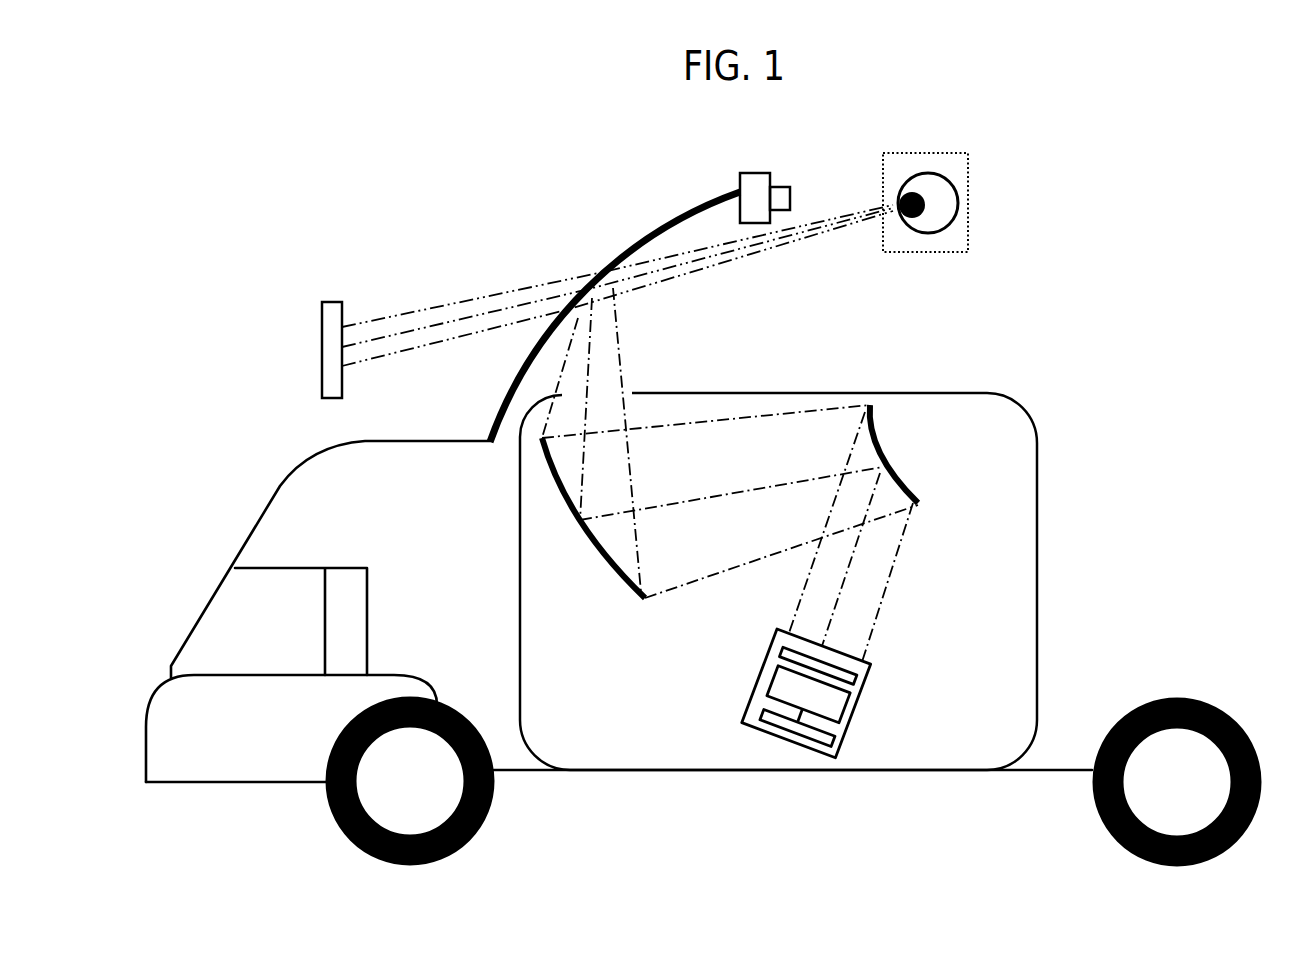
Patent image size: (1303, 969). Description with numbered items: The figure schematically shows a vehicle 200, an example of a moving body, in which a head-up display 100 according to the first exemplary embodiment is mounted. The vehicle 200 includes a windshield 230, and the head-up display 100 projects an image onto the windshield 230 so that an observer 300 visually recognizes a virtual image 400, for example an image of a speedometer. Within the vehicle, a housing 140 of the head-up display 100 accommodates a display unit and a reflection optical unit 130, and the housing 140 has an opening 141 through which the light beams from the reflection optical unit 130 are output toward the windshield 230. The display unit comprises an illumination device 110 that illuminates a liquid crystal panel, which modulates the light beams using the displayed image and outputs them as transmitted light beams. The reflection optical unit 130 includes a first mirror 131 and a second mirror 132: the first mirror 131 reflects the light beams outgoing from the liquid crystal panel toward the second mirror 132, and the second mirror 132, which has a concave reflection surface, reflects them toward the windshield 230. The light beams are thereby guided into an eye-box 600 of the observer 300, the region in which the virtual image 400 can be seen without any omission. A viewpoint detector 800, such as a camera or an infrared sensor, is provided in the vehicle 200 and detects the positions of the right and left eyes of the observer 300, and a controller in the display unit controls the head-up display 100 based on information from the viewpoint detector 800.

The head-up display 100 is at (834, 529).
The illumination device 110 is at (813, 585).
The reflection optical unit 130 is at (743, 545).
The first mirror 131 is at (903, 473).
The second mirror 132 is at (597, 552).
The housing 140 is at (1028, 427).
The opening 141 is at (600, 399).
The vehicle 200 is at (273, 491).
The windshield 230 is at (640, 243).
The observer 300 is at (957, 187).
The virtual image 400 is at (321, 343).
The eye-box 600 is at (968, 240).
The viewpoint detector 800 is at (740, 180).